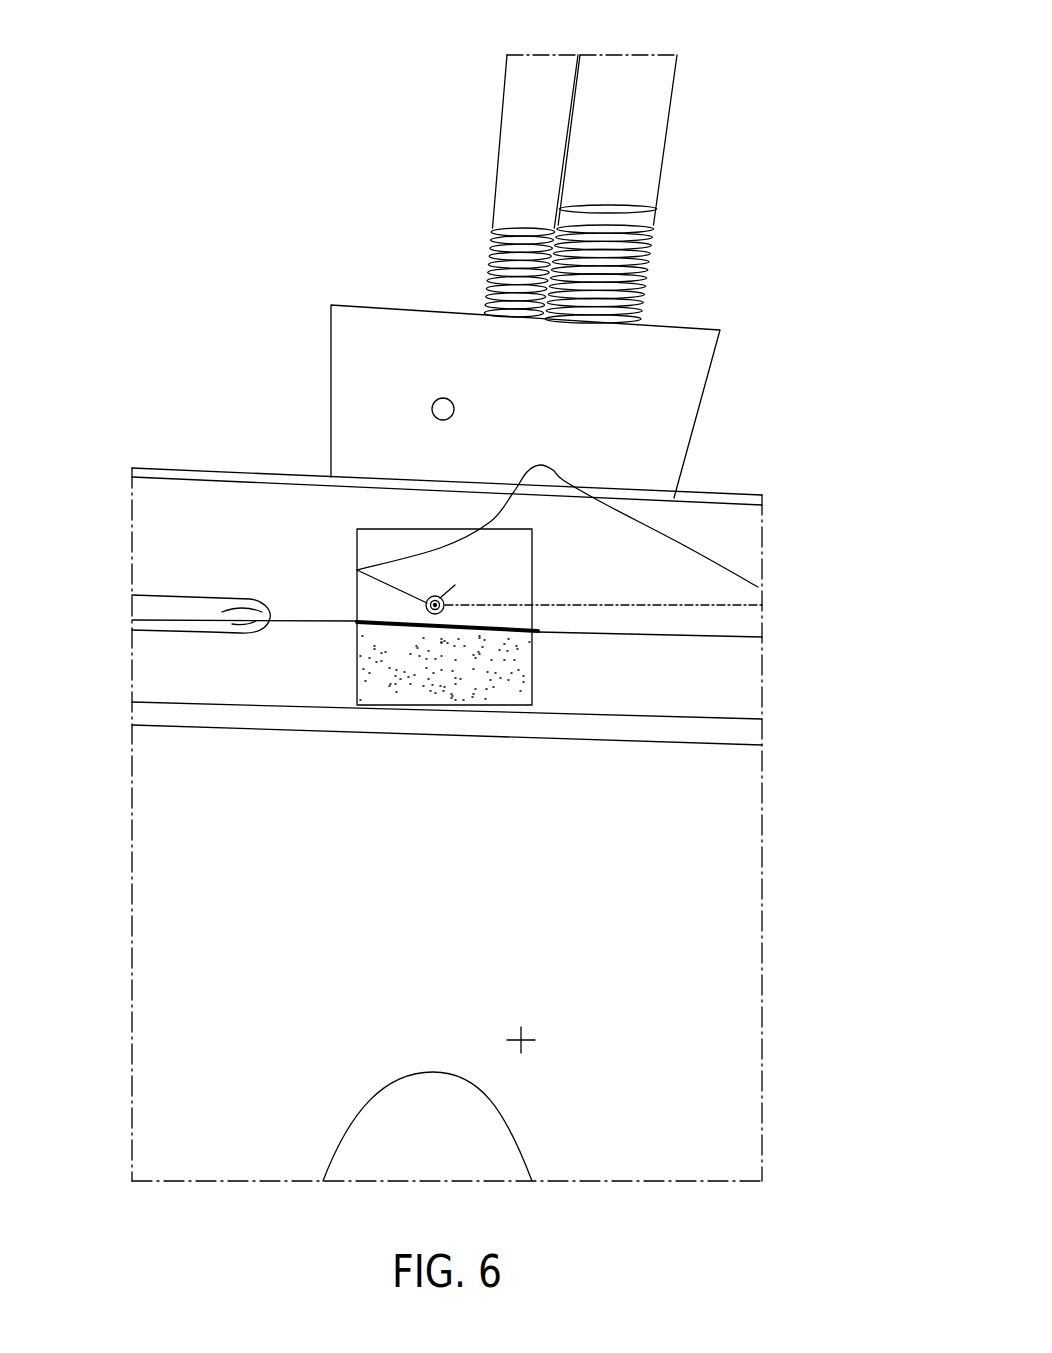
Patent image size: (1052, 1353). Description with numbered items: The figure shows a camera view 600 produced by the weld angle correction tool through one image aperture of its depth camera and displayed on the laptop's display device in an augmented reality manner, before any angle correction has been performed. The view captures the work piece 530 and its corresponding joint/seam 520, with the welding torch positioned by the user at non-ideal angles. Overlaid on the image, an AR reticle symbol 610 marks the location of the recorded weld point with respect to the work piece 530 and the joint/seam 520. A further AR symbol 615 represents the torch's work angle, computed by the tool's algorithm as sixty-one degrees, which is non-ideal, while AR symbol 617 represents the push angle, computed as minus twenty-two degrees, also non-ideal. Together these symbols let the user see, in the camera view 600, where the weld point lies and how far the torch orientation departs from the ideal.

The camera view 600 is at (162, 92).
The joint/seam 520 is at (300, 617).
The work piece 530 is at (656, 683).
The AR reticle symbol 610 is at (427, 624).
The AR symbol for work angle 615 is at (435, 597).
The AR symbol for push angle 617 is at (447, 604).